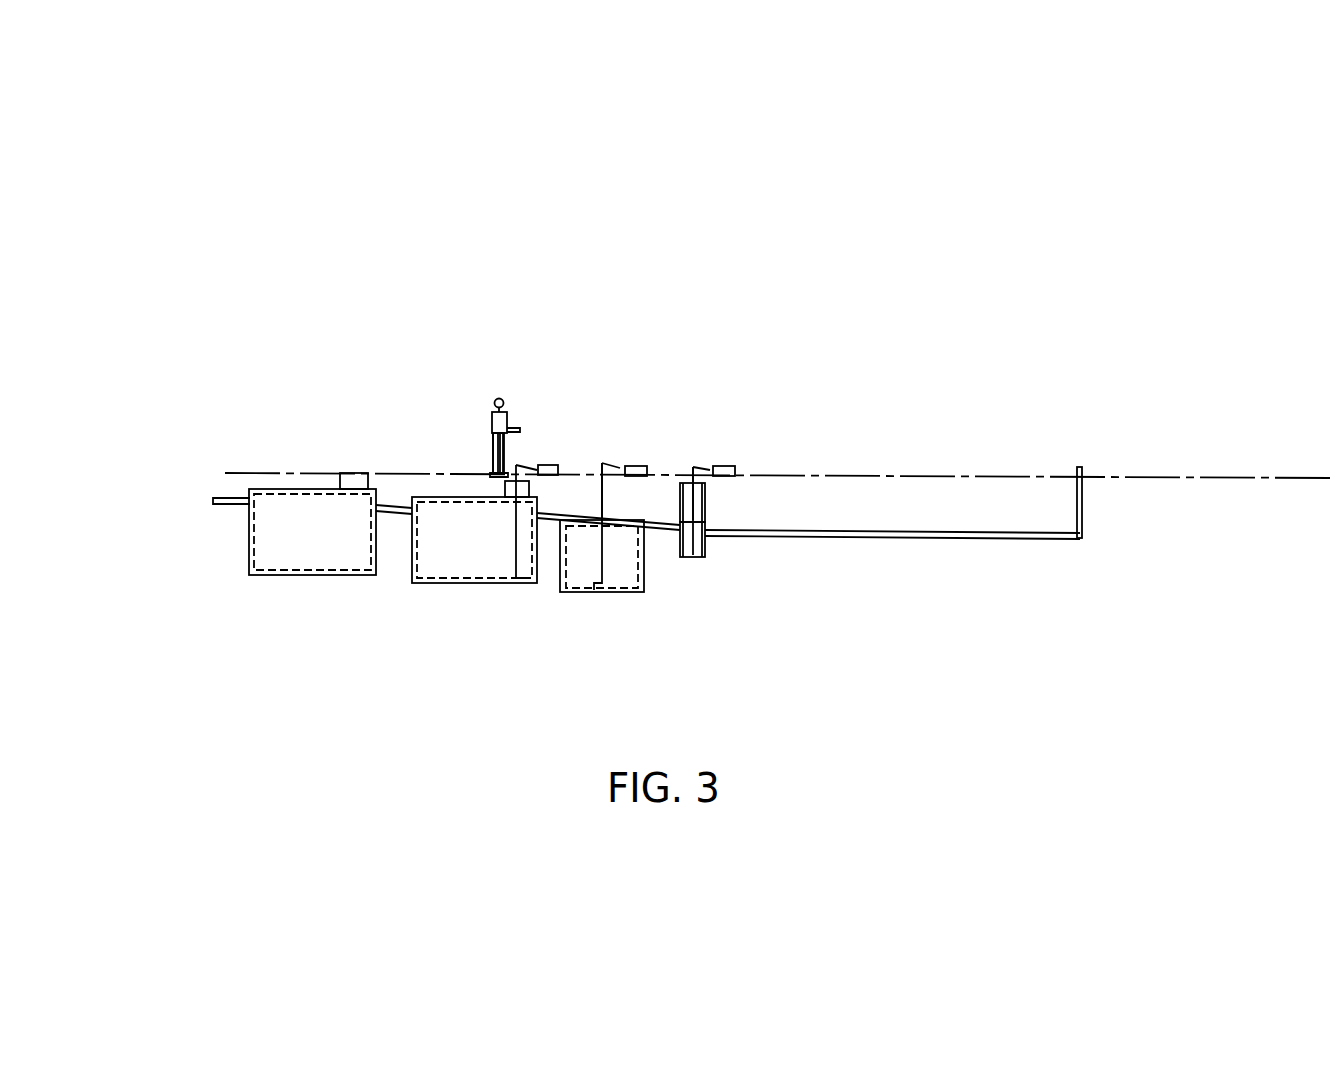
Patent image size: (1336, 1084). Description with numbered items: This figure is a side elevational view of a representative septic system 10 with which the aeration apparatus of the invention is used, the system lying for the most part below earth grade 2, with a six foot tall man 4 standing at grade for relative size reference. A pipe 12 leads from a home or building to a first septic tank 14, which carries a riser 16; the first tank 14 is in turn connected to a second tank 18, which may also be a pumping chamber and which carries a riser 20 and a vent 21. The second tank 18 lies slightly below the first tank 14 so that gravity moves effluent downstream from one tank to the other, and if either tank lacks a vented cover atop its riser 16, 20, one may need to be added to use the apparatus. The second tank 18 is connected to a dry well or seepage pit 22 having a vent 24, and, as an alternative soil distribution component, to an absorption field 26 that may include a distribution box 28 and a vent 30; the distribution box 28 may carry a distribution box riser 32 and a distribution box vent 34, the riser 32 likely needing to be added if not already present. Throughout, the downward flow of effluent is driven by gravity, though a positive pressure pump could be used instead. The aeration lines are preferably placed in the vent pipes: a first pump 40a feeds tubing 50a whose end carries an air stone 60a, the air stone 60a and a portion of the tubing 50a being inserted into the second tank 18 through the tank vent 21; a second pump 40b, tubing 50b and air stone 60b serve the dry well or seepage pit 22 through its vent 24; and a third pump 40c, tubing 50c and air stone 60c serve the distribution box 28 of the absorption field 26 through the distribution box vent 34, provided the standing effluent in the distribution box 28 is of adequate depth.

The earth grade 2 is at (938, 475).
The six foot tall man 4 is at (497, 396).
The septic system 10 is at (308, 632).
The pipe 12 is at (217, 494).
The first septic tank 14 is at (292, 533).
The riser 16 is at (352, 471).
The second tank 18 is at (450, 548).
The riser 20 is at (495, 471).
The vent 21 is at (509, 454).
The dry well or seepage pit 22 is at (625, 572).
The vent 24 is at (594, 458).
The absorption field 26 is at (940, 541).
The distribution box 28 is at (708, 550).
The vent 30 is at (1087, 492).
The distribution box riser 32 is at (708, 503).
The distribution box vent 34 is at (688, 460).
The first pump 40a is at (548, 462).
The second pump 40b is at (640, 458).
The third pump 40c is at (738, 458).
The tubing 50a is at (527, 455).
The tubing 50b is at (617, 457).
The tubing 50c is at (712, 457).
The air stone 60a is at (512, 588).
The air stone 60b is at (595, 596).
The air stone 60c is at (694, 560).